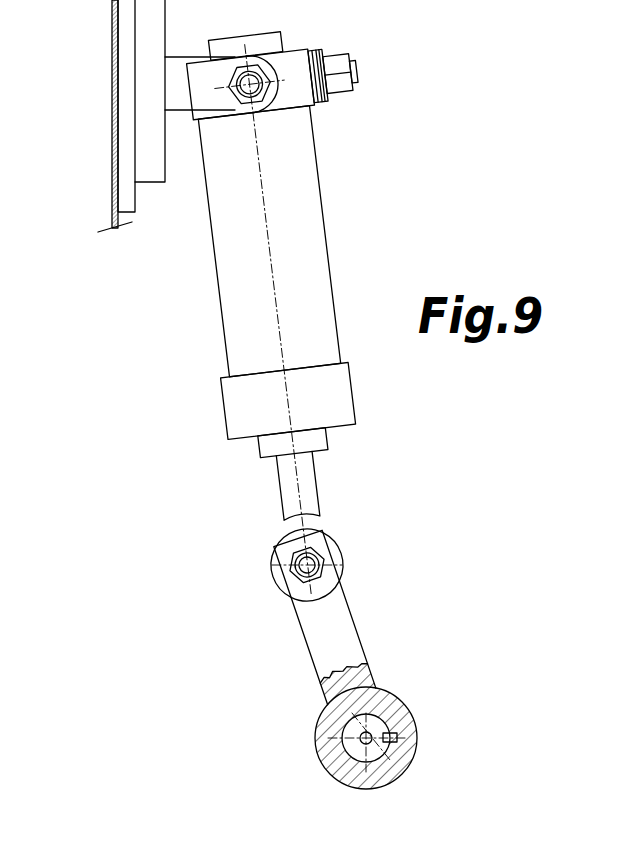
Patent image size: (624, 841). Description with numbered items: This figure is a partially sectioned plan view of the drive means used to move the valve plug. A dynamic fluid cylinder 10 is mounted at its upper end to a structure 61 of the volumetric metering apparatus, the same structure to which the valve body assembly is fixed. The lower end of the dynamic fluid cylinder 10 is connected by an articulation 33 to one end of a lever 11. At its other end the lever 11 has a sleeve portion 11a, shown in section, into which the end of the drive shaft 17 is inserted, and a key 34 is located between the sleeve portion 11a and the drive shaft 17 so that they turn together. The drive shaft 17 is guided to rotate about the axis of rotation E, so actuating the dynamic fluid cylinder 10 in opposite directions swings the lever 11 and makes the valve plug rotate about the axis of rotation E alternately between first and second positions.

The structure 61 is at (112, 35).
The dynamic fluid cylinder 10 is at (230, 297).
The articulation 33 is at (290, 557).
The lever 11 is at (315, 623).
The sleeve portion 11a is at (322, 758).
The key 34 is at (408, 710).
The drive shaft 17 is at (387, 753).
The axis of rotation E is at (343, 783).